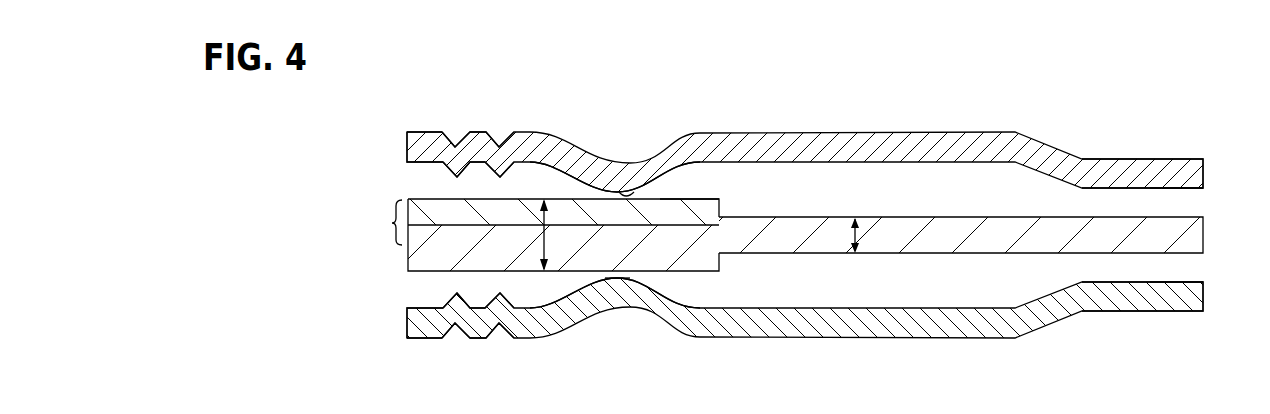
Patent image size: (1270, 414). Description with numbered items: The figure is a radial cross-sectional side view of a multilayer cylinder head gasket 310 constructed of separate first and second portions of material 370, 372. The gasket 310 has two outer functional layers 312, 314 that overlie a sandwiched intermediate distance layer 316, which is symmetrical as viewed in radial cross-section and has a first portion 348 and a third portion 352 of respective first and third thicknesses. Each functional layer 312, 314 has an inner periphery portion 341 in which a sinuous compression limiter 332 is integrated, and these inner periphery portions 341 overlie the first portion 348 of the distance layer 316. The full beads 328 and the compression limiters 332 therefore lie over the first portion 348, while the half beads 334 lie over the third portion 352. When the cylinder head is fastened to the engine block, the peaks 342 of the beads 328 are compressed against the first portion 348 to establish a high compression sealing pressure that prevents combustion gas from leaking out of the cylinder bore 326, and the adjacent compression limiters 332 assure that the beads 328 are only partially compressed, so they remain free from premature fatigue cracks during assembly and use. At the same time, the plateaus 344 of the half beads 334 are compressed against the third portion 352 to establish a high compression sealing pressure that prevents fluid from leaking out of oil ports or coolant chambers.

The multilayer gasket 310 is at (999, 109).
The functional layer 312 is at (533, 132).
The functional layer 314 is at (552, 336).
The cylinder bore 326 is at (747, 229).
The distance layer 316 is at (379, 222).
The second portion of material 372 is at (405, 198).
The first portion of material 370 is at (407, 258).
The third portion 352 is at (787, 217).
The sinuous compression limiter 332 is at (458, 116).
The inner periphery portion 341 is at (425, 133).
The bead 328 is at (590, 190).
The peak 342 is at (637, 190).
The first portion 348 is at (690, 199).
The half bead 334 is at (1147, 159).
The plateau 344 is at (1165, 189).